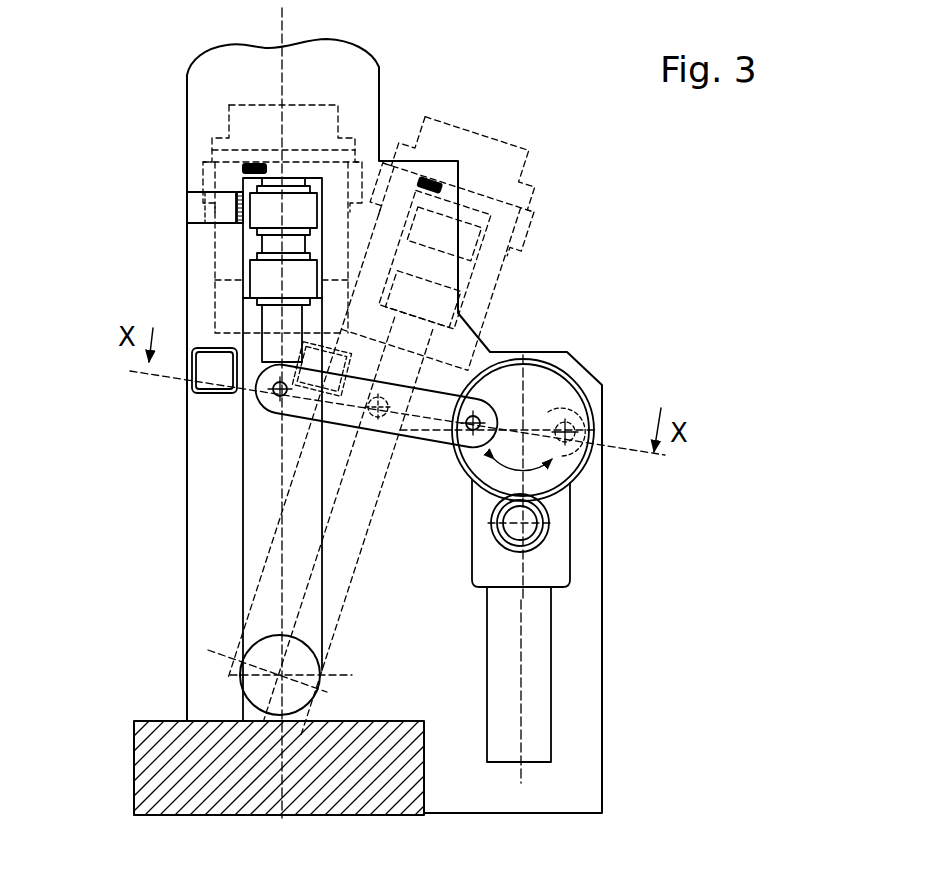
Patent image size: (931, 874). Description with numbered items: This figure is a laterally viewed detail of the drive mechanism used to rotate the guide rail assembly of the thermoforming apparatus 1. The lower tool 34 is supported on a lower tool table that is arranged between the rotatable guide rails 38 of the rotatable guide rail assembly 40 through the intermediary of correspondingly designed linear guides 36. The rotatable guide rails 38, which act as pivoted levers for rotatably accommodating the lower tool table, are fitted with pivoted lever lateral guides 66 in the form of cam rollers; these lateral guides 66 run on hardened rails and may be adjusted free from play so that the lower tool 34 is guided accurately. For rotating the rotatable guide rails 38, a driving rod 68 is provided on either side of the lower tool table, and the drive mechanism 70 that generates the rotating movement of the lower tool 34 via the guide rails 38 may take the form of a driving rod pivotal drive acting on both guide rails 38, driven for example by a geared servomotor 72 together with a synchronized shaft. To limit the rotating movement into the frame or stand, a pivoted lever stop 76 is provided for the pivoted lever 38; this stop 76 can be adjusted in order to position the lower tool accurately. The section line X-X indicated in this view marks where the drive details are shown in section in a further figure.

The thermoforming apparatus 1 is at (128, 660).
The lower tool 34 is at (333, 130).
The linear guides 36 is at (266, 226).
The rotatable guide rail 38 is at (258, 518).
The rotatable guide rail assembly 40 is at (374, 621).
The pivoted lever lateral guide 66 is at (250, 165).
The driving rod 68 is at (303, 418).
The drive mechanism 70 is at (551, 523).
The geared servomotor 72 is at (534, 720).
The pivoted lever stop 76 is at (202, 212).